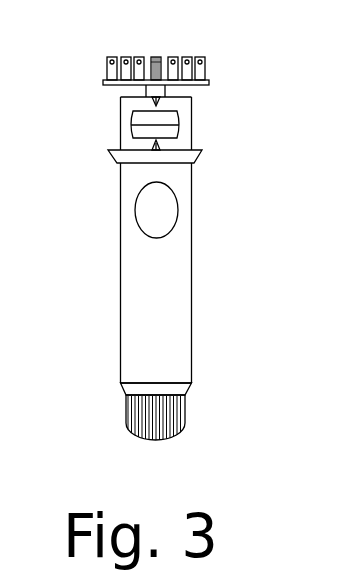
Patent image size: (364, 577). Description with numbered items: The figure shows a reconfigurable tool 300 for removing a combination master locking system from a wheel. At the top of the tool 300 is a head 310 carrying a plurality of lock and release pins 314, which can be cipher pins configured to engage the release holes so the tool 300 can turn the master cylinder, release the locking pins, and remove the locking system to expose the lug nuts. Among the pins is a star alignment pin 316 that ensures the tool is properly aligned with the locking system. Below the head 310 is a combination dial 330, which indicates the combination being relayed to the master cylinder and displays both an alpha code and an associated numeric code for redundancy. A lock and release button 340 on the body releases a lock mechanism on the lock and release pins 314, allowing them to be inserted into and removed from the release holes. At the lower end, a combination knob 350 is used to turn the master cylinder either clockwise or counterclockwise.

The tool 300 is at (225, 240).
The head 310 is at (209, 81).
The lock and release pins 314 is at (108, 57).
The star alignment pin 316 is at (156, 57).
The combination dial 330 is at (132, 127).
The lock and release button 340 is at (135, 212).
The combination knob 350 is at (127, 410).